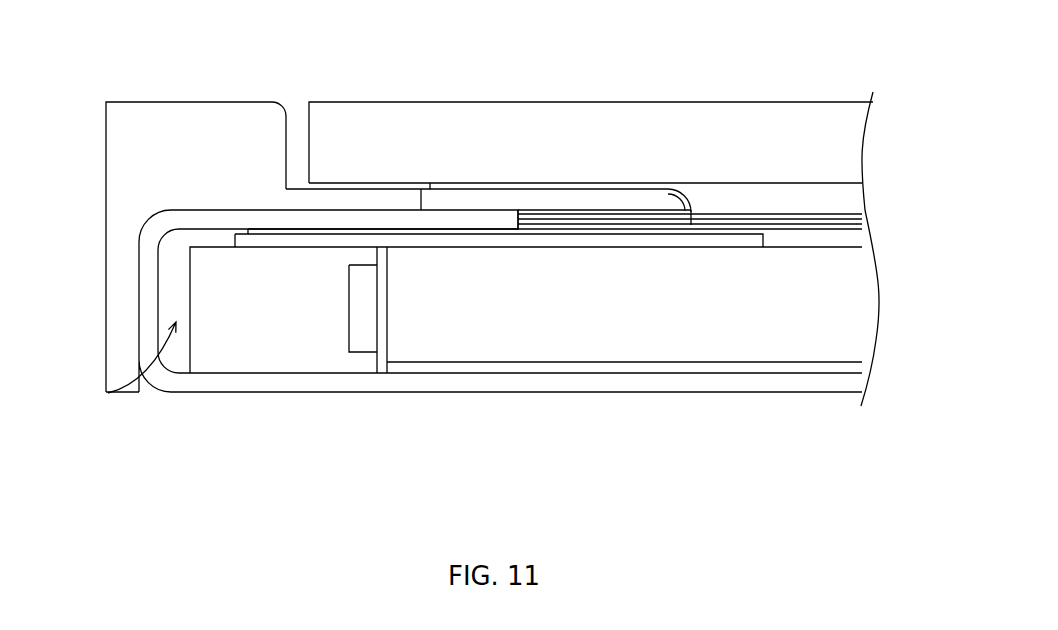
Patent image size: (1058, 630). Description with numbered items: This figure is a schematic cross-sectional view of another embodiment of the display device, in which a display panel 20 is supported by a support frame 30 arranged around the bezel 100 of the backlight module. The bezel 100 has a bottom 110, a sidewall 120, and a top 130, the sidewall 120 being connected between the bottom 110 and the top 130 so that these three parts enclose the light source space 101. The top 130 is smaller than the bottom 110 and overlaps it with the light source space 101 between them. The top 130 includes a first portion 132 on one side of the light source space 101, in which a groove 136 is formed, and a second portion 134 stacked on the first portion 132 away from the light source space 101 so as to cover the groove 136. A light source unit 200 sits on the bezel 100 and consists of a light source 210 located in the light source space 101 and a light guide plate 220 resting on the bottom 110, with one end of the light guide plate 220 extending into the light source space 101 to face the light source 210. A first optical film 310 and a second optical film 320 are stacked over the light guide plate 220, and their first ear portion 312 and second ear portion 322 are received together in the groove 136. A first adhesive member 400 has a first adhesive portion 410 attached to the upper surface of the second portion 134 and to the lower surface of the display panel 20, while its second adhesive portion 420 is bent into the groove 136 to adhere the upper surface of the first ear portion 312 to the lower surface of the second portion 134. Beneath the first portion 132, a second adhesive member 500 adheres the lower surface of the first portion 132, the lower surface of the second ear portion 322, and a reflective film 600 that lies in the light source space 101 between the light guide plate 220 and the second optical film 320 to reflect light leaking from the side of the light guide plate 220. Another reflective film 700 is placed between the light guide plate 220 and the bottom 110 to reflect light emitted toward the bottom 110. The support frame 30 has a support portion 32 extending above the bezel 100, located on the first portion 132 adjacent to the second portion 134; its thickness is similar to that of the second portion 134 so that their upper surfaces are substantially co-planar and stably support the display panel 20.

The display panel 20 is at (788, 108).
The support frame 30 is at (160, 115).
The support portion 32 is at (342, 200).
The bezel 100 is at (193, 223).
The light source space 101 is at (121, 366).
The bottom 110 is at (750, 383).
The sidewall 120 is at (148, 284).
The top 130 is at (403, 47).
The first portion 132 is at (432, 220).
The second portion 134 is at (442, 200).
The groove 136 is at (522, 201).
The light source unit 200 is at (445, 436).
The light source 210 is at (295, 350).
The light guide plate 220 is at (446, 348).
The first optical film 310 is at (783, 213).
The first ear portion 312 is at (560, 217).
The second optical film 320 is at (813, 228).
The second ear portion 322 is at (509, 208).
The first adhesive member 400 is at (732, 37).
The first adhesive portion 410 is at (642, 184).
The second adhesive portion 420 is at (653, 207).
The second adhesive member 500 is at (280, 233).
The reflective film 600 is at (262, 240).
The reflective film 700 is at (645, 374).